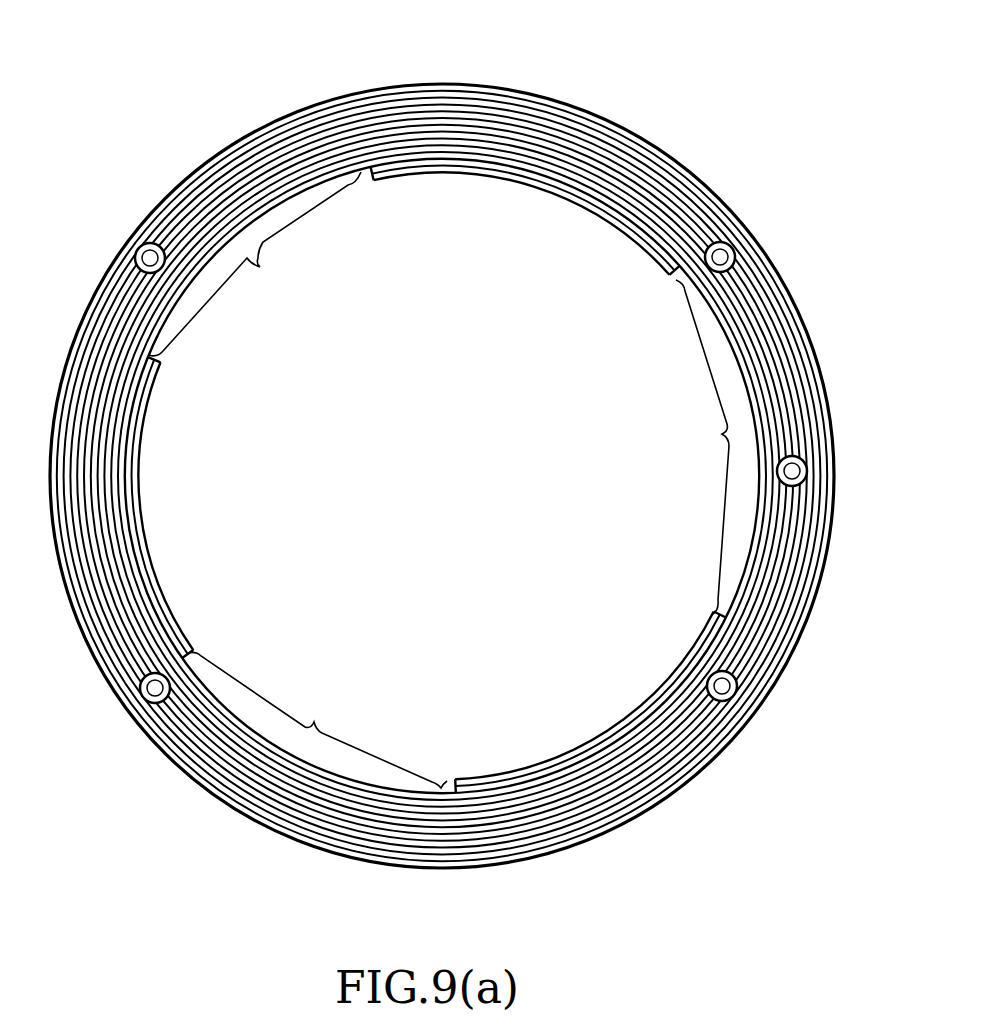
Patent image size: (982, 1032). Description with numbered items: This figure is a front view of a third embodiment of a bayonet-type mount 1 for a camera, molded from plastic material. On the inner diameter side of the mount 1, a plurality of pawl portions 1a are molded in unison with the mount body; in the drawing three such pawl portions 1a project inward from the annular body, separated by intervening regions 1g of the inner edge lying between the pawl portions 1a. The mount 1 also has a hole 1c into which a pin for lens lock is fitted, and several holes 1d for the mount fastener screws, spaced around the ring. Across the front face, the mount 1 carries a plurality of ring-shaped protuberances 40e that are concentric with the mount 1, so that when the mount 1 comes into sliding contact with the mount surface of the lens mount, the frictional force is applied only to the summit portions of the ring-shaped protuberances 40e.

The mount 1 is at (471, 464).
The pawl portion 1a is at (543, 172).
The hole 1c is at (794, 472).
The holes for mount fastener screws 1d is at (142, 252).
The recessed portion 1g is at (439, 480).
The ring-shaped protuberance 40e is at (250, 172).